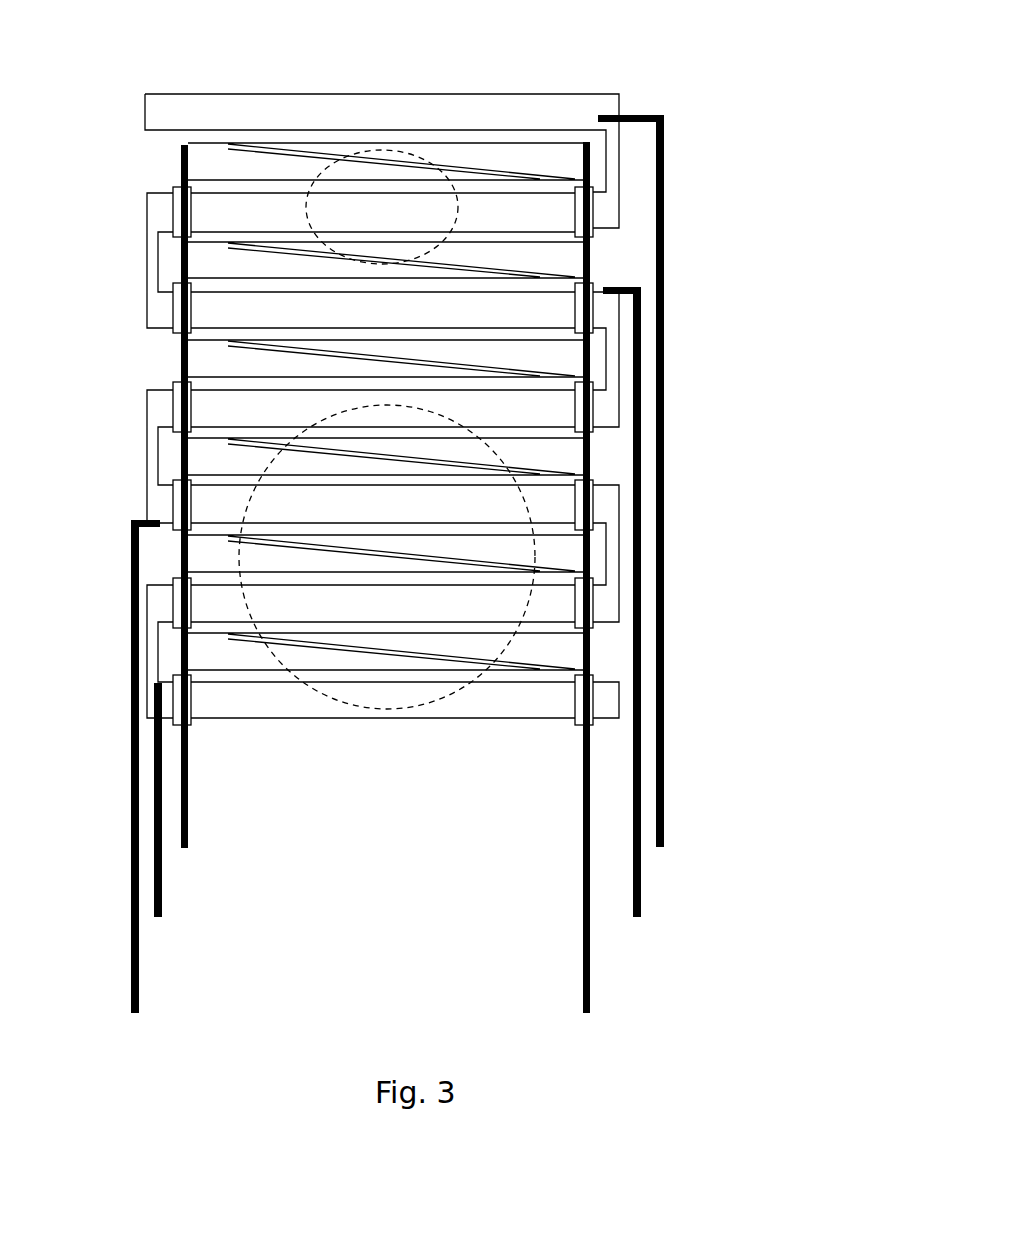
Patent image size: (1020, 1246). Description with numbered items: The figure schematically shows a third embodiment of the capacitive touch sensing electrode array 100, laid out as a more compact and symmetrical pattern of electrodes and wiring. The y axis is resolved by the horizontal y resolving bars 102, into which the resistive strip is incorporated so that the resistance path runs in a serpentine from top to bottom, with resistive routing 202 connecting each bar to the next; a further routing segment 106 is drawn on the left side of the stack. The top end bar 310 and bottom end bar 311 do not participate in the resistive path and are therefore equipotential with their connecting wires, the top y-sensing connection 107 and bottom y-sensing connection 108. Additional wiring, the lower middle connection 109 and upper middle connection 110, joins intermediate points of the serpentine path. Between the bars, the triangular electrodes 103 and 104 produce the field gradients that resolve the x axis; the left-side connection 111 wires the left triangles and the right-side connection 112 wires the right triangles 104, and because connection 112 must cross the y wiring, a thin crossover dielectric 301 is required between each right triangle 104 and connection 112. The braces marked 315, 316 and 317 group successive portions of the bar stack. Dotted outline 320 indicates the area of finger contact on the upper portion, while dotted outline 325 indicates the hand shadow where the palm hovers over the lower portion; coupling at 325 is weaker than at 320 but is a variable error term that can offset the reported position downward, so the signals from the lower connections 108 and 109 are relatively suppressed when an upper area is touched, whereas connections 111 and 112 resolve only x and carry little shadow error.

The capacitive touch sensing array 100 is at (620, 58).
The y resolving bars 102 is at (552, 505).
The left triangular electrodes 103 is at (200, 367).
The right triangular electrodes 104 is at (557, 355).
The interconnect conductor 106 is at (165, 412).
The top y-sensing connection 107 is at (667, 797).
The bottom y-sensing connection 108 is at (165, 890).
The lower middle connection 109 is at (142, 980).
The upper middle connection 110 is at (645, 890).
The left-side connection 111 is at (192, 797).
The right-side connection 112 is at (594, 960).
The resistive routing 202 is at (155, 258).
The thin crossover dielectric 301 is at (590, 285).
The top end bar 310 is at (503, 100).
The bottom end bar 311 is at (528, 722).
The first winding section 315 is at (747, 93).
The second winding section 316 is at (767, 290).
The third winding section 317 is at (712, 477).
The area of finger contact 320 is at (383, 150).
The hand shadow area 325 is at (263, 463).